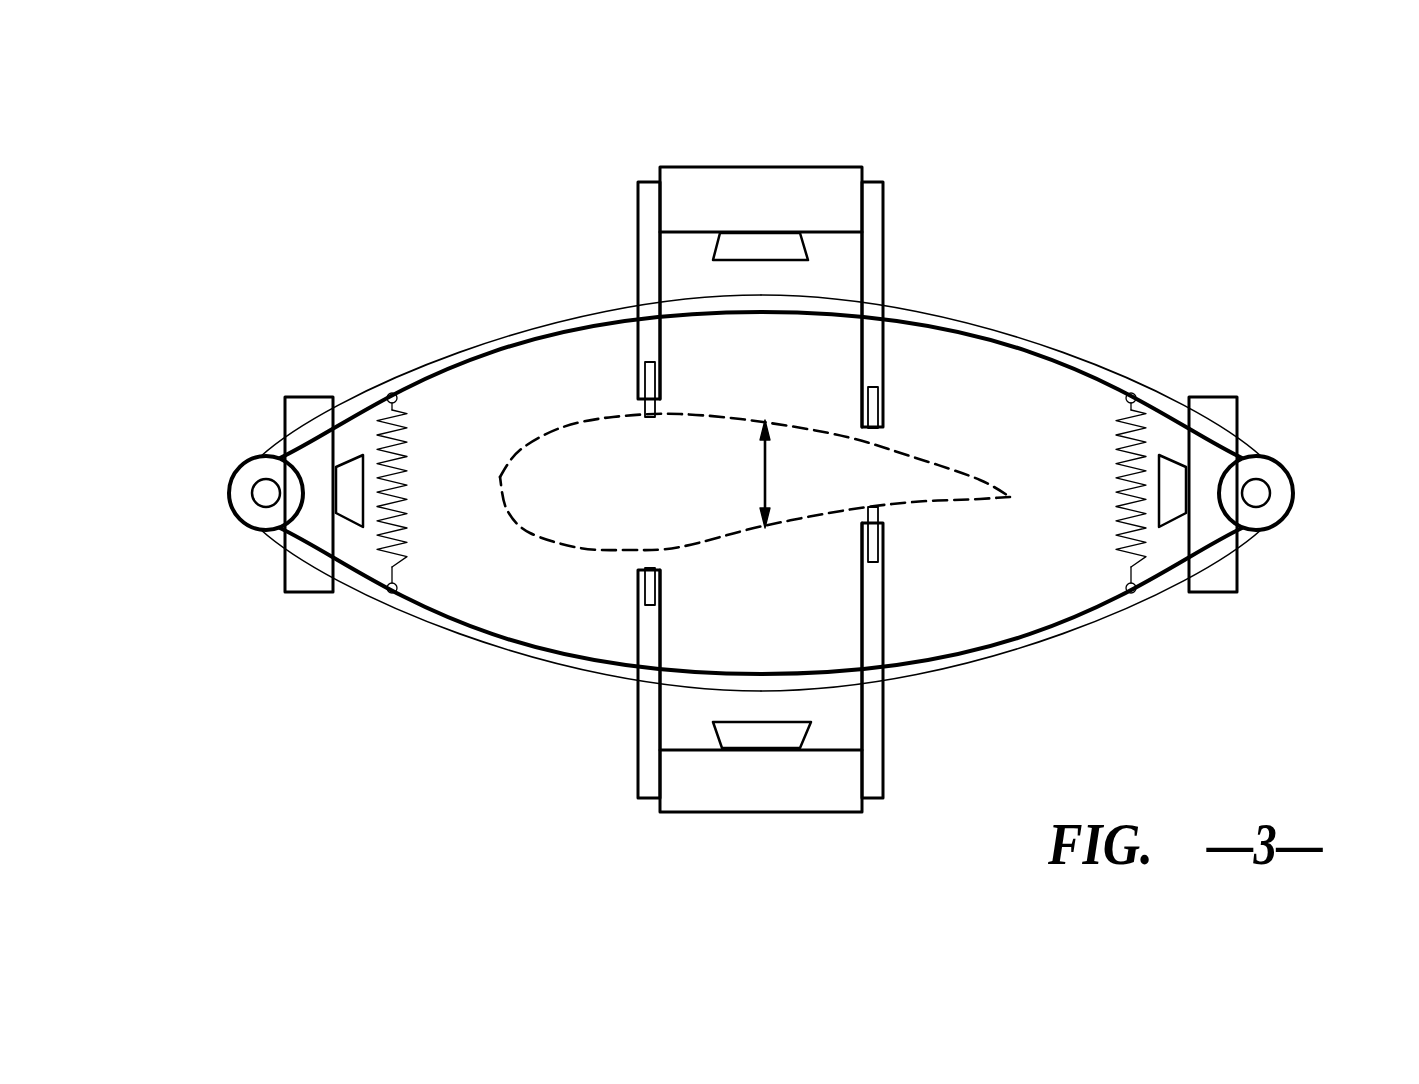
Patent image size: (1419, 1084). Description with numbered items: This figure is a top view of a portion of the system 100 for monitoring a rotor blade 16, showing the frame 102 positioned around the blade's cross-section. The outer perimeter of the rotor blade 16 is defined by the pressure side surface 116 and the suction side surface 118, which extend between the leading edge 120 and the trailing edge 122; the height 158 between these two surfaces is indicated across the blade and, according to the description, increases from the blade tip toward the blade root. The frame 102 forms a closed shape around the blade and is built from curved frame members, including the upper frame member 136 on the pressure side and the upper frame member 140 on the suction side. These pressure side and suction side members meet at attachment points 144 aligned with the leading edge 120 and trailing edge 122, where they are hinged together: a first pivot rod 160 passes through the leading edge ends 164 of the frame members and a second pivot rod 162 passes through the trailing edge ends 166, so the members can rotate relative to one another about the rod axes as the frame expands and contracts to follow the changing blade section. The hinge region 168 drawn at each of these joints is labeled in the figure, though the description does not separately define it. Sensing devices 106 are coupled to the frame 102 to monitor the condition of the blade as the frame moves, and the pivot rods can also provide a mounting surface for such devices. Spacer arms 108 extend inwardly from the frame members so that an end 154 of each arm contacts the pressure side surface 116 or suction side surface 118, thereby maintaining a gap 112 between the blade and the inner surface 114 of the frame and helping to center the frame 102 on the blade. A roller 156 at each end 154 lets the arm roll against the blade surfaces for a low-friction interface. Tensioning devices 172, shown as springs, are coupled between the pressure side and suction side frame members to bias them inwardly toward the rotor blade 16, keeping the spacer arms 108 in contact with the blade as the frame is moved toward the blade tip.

The rotor blade 16 is at (619, 499).
The system 100 is at (1222, 250).
The frame 102 is at (1053, 344).
The sensing device 106 is at (715, 165).
The spacer arm 108 is at (652, 250).
The gap 112 is at (731, 374).
The inner surface of the frame 114 is at (998, 345).
The pressure side surface 116 is at (545, 548).
The suction side surface 118 is at (548, 437).
The leading edge 120 is at (498, 480).
The trailing edge 122 is at (1018, 497).
The upper frame member 136 is at (975, 678).
The upper frame member 140 is at (457, 349).
The attachment point 144 is at (231, 487).
The end of spacer arm 154 is at (643, 385).
The roller 156 is at (645, 408).
The height 158 is at (767, 470).
The first pivot rod 160 is at (264, 490).
The second pivot rod 162 is at (1258, 486).
The leading edge end 164 is at (252, 455).
The trailing edge end 166 is at (1240, 420).
The hinge ring 168 is at (252, 520).
The tensioning device 172 is at (1131, 393).